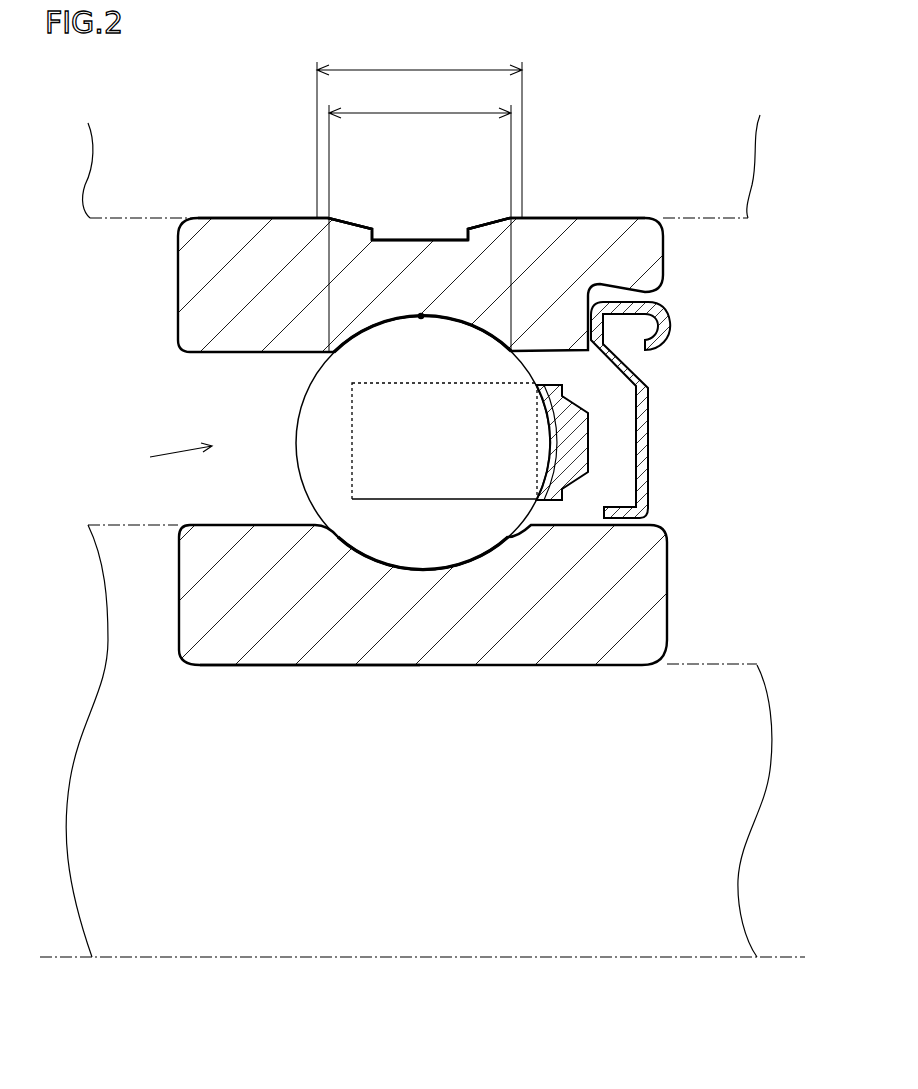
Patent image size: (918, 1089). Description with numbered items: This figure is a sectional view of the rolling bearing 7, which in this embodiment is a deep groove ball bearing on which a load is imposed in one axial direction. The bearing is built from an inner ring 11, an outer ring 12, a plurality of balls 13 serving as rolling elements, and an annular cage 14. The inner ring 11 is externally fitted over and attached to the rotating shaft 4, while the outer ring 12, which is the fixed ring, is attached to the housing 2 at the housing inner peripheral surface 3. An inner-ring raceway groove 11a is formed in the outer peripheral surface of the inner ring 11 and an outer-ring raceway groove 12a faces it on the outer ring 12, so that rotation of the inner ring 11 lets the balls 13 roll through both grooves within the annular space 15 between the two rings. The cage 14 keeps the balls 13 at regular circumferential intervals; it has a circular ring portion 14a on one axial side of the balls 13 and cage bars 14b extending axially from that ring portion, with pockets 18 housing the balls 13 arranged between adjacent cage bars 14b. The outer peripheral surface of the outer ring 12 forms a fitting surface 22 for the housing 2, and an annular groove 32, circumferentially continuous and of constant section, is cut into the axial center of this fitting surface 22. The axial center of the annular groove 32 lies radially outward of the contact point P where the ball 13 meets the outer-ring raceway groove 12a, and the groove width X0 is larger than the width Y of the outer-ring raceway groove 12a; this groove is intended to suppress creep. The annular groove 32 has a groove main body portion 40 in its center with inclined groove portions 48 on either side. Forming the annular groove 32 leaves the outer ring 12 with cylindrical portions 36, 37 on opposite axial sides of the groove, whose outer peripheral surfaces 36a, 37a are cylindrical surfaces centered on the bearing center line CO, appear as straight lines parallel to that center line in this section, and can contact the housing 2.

The housing 2 is at (137, 205).
The housing inner peripheral surface 3 is at (103, 223).
The rotating shaft 4 is at (713, 663).
The rolling bearing 7 is at (194, 678).
The inner ring 11 is at (617, 603).
The inner-ring raceway groove 11a is at (376, 550).
The outer ring 12 is at (419, 245).
The outer-ring raceway groove 12a is at (388, 317).
The ball 13 is at (472, 533).
The cage 14 is at (601, 426).
The circular ring portion 14a is at (572, 465).
The cage bar 14b is at (443, 500).
The annular space 15 is at (163, 456).
The pocket 18 is at (373, 502).
The fitting surface 22 is at (624, 207).
The annular groove 32 is at (452, 219).
The cylindrical portion 36 is at (223, 227).
The outer peripheral surface 36a is at (273, 218).
The cylindrical portion 37 is at (618, 227).
The outer peripheral surface 37a is at (563, 220).
The groove main body portion 40 is at (417, 240).
The inclined groove portion 48 is at (355, 224).
The contact point P is at (421, 318).
The groove width X0 is at (419, 132).
The width of the outer-ring raceway groove Y is at (420, 221).
The bearing center line CO is at (783, 955).